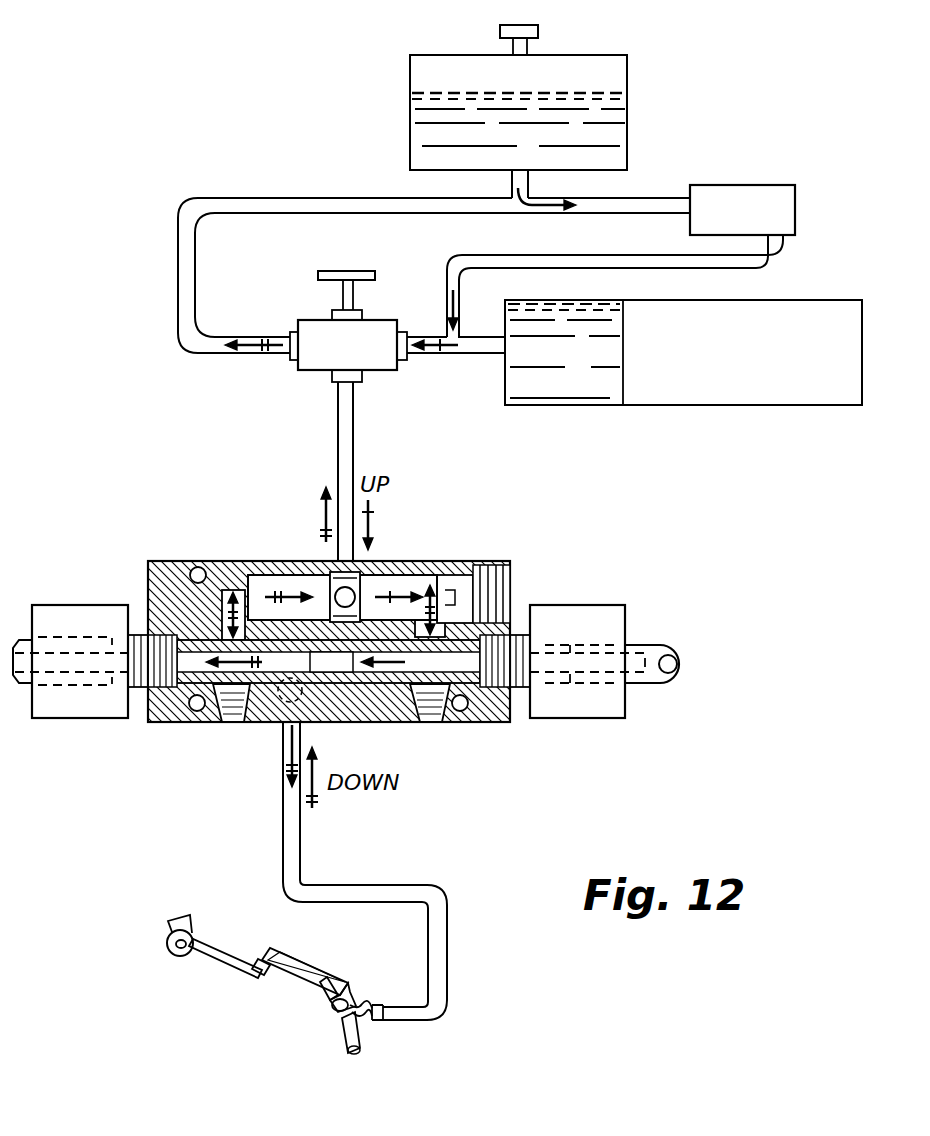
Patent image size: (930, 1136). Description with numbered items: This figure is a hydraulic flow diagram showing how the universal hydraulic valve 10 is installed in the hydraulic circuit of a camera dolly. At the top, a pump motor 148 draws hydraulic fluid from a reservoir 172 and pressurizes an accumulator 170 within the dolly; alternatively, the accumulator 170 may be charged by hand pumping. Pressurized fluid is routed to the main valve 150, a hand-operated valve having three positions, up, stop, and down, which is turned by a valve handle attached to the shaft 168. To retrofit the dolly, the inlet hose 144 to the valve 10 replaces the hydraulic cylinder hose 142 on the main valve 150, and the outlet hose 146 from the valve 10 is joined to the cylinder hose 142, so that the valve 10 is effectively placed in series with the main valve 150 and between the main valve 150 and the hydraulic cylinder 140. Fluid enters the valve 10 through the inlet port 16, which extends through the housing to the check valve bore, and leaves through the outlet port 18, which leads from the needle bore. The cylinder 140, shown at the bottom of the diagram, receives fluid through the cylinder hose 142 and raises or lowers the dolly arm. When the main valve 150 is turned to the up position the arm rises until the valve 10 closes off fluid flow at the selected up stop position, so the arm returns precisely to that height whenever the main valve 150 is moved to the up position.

The universal hydraulic valve 10 is at (452, 738).
The inlet port 16 is at (357, 588).
The outlet port 18 is at (292, 705).
The hydraulic cylinder 140 is at (290, 1010).
The hydraulic cylinder hose 142 is at (448, 932).
The inlet hose 144 is at (338, 432).
The outlet hose 146 is at (283, 834).
The pump motor 148 is at (766, 156).
The main valve 150 is at (312, 330).
The shaft 168 is at (332, 271).
The accumulator 170 is at (797, 312).
The reservoir 172 is at (410, 92).